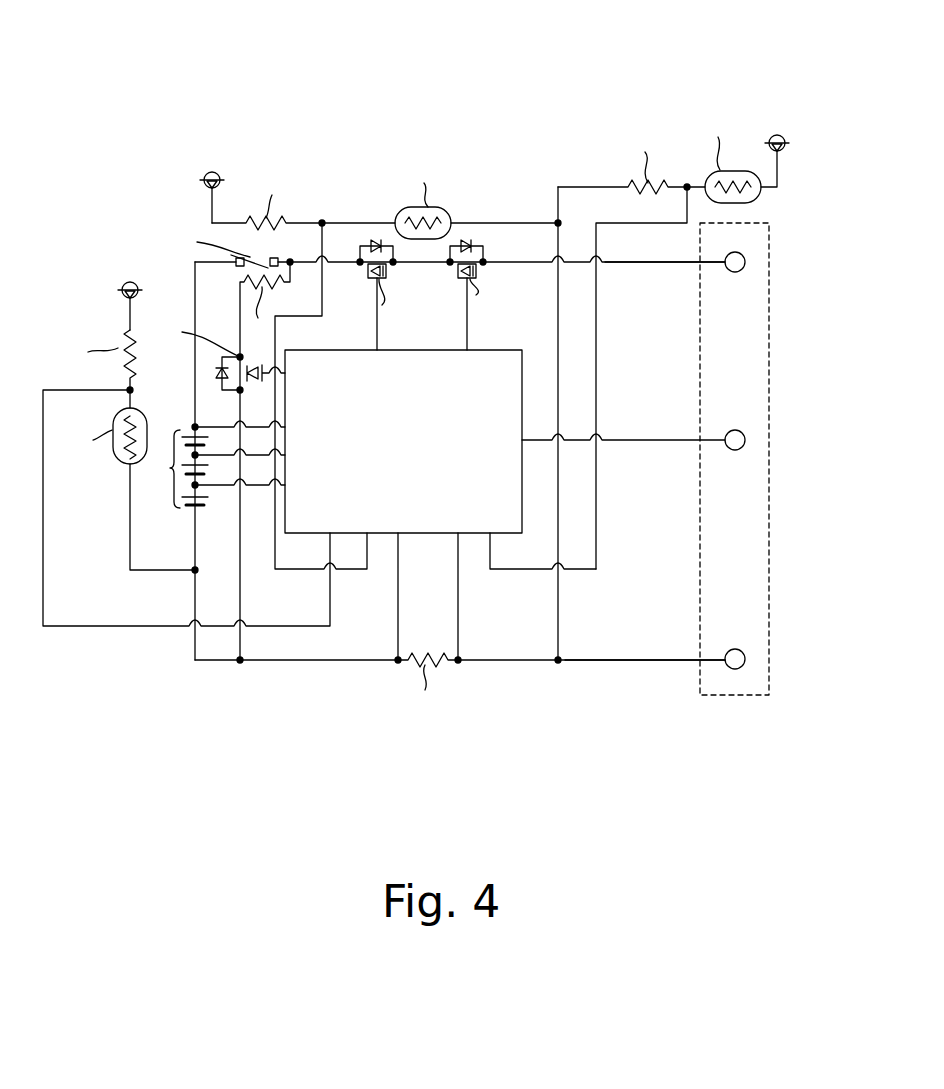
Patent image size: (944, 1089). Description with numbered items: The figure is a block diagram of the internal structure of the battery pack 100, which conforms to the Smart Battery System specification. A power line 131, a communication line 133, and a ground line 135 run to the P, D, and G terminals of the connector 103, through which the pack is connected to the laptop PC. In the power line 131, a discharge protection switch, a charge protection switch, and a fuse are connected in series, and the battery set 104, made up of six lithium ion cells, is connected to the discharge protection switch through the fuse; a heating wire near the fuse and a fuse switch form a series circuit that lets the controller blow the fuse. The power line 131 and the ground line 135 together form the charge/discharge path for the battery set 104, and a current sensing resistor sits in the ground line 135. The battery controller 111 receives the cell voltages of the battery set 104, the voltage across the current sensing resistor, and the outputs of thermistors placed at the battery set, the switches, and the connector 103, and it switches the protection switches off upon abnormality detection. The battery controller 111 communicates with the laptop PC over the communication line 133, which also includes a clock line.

The battery pack 100 is at (640, 48).
The connector 103 is at (737, 696).
The battery set 104 is at (172, 468).
The battery controller 111 is at (485, 350).
The power line 131 is at (648, 263).
The communication line 133 is at (636, 440).
The ground line 135 is at (635, 660).